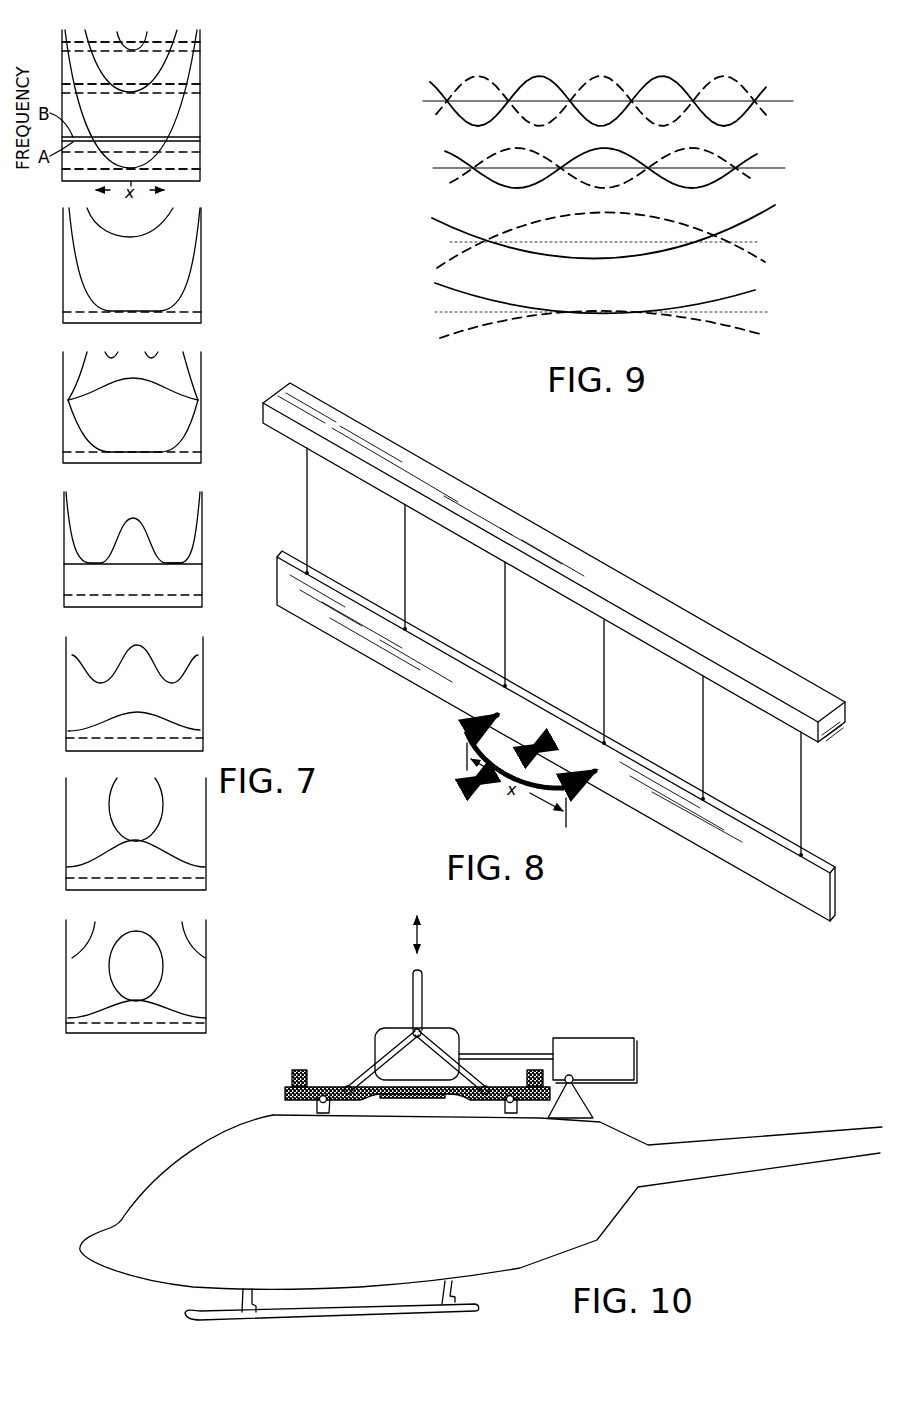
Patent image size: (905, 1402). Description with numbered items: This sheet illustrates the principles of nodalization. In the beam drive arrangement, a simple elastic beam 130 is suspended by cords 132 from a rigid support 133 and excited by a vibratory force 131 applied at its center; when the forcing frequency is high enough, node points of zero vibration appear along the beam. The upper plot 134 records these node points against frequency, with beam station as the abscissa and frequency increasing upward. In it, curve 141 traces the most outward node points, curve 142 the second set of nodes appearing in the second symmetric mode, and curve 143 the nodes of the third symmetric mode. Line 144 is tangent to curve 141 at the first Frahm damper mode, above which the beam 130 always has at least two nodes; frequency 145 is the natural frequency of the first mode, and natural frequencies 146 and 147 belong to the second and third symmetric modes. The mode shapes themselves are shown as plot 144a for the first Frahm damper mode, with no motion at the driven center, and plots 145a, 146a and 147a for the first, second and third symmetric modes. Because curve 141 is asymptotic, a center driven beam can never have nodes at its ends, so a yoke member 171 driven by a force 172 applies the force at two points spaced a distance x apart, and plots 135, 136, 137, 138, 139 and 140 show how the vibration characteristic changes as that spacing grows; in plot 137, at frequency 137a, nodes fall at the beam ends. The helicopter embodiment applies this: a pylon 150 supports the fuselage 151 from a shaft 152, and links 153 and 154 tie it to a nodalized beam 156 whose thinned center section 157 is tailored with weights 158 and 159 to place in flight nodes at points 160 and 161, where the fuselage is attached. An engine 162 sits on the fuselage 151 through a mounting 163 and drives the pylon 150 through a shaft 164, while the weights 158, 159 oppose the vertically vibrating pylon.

In FIG. 8, the beam 130 is at (405, 677).
In FIG. 8, the vibratory force 131 is at (528, 748).
In FIG. 8, the cords 132 is at (802, 796).
In FIG. 8, the rigid support 133 is at (730, 643).
In FIG. 7, the upper plot 134 is at (136, 94).
In FIG. 7, the plot 135 is at (147, 279).
In FIG. 7, the plot 136 is at (147, 426).
In FIG. 7, the plot 137 is at (161, 549).
In FIG. 7, the frequency 137a is at (194, 565).
In FIG. 7, the plot 138 is at (150, 694).
In FIG. 7, the plot 139 is at (150, 816).
In FIG. 7, the plot 140 is at (150, 976).
In FIG. 7, the curve 141 is at (183, 113).
In FIG. 7, the curve 142 is at (167, 60).
In FIG. 7, the curve 143 is at (147, 36).
In FIG. 7, the line 144 is at (181, 168).
In FIG. 7, the frequency 145 is at (181, 151).
In FIG. 7, the natural frequency 146 is at (173, 85).
In FIG. 7, the natural frequency 147 is at (108, 41).
In FIG. 9, the plot 144a is at (590, 310).
In FIG. 9, the plot 145a is at (640, 232).
In FIG. 9, the plot 146a is at (617, 168).
In FIG. 9, the plot 147a is at (601, 92).
In FIG. 8, the member 171 is at (580, 779).
In FIG. 8, the force 172 is at (492, 778).
In FIG. 10, the pylon 150 is at (423, 988).
In FIG. 10, the fuselage 151 is at (418, 1225).
In FIG. 10, the shaft 152 is at (413, 1030).
In FIG. 10, the link 153 is at (442, 1048).
In FIG. 10, the link 154 is at (368, 1072).
In FIG. 10, the nodalized beam 156 is at (388, 1120).
In FIG. 10, the thinned center section 157 is at (420, 1101).
In FIG. 10, the weight 158 is at (291, 1075).
In FIG. 10, the weight 159 is at (536, 1069).
In FIG. 10, the node point 160 is at (322, 1106).
In FIG. 10, the node point 161 is at (512, 1106).
In FIG. 10, the engine 162 is at (601, 1037).
In FIG. 10, the mounting 163 is at (595, 1108).
In FIG. 10, the shaft 164 is at (523, 1053).